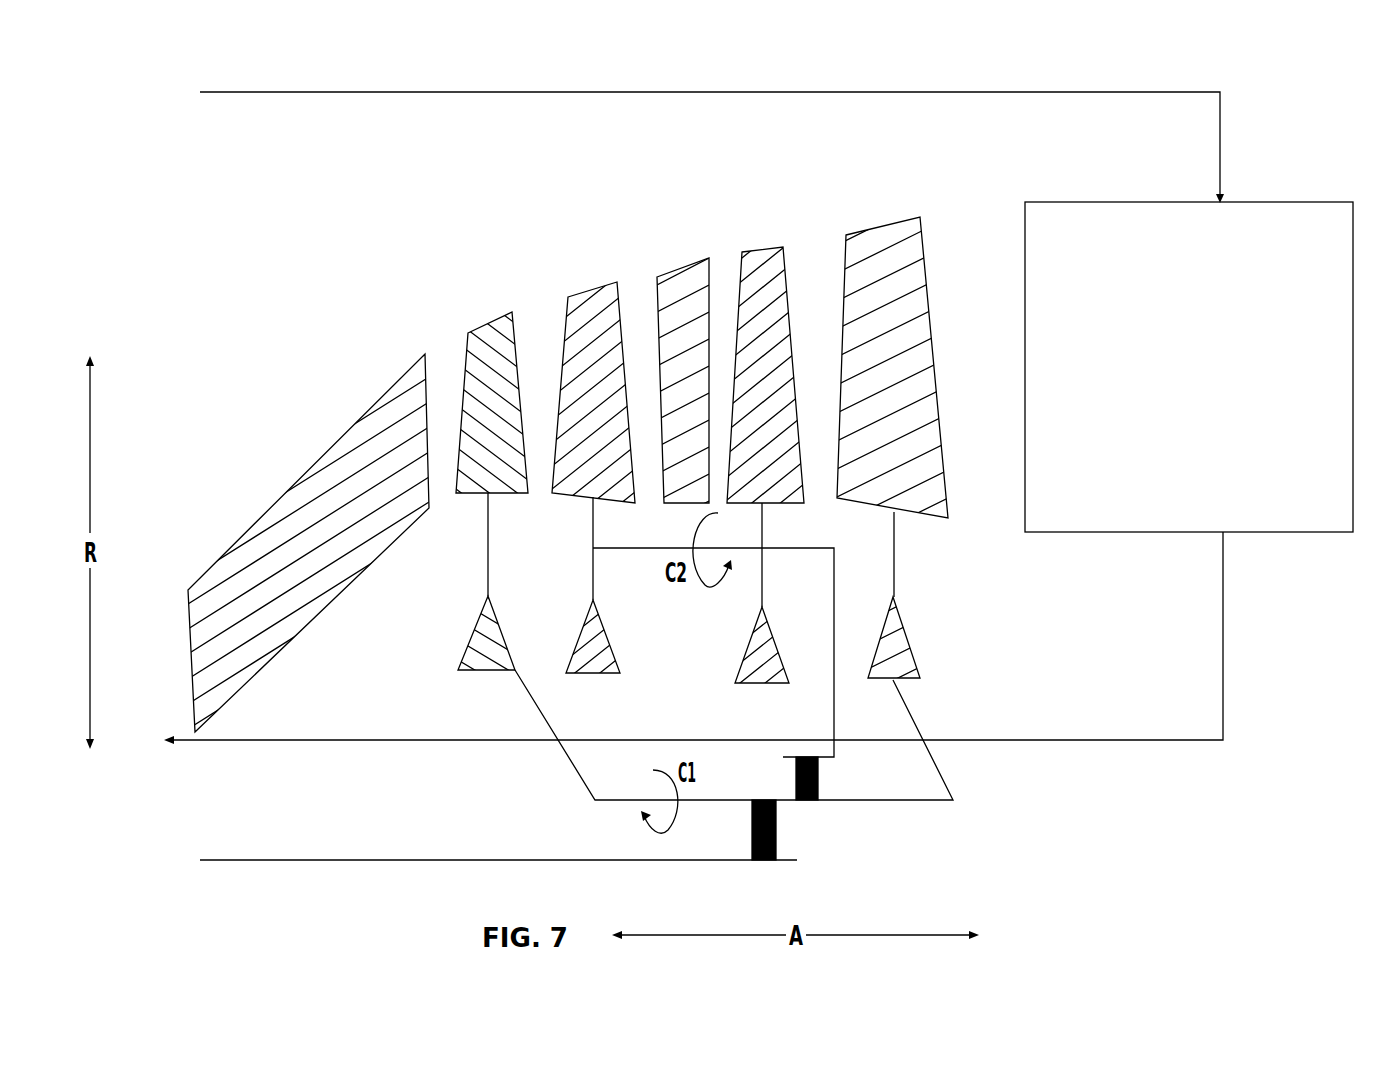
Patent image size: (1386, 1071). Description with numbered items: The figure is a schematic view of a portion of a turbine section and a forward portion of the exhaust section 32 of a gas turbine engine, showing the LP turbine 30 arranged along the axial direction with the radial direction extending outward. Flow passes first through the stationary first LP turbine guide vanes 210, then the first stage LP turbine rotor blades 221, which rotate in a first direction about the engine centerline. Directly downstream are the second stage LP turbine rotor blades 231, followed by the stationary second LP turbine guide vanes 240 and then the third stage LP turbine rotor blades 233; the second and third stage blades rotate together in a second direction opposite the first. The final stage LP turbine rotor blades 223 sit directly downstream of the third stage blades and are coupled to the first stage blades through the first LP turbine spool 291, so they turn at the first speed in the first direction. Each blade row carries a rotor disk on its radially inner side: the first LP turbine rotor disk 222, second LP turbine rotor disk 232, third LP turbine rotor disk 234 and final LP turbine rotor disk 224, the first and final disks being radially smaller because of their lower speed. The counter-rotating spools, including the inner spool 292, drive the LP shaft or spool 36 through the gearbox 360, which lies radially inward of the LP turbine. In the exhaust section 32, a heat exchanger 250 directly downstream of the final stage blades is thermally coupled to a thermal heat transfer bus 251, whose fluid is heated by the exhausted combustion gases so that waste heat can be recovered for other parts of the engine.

The LP turbine 30 is at (256, 334).
The exhaust section 32 is at (1302, 96).
The LP shaft or spool 36 is at (337, 860).
The first LP turbine guide vanes 210 is at (300, 500).
The first stage LP turbine rotor blades 221 is at (484, 338).
The first LP turbine rotor disk 222 is at (485, 632).
The final stage LP turbine rotor blades 223 is at (886, 240).
The final LP turbine rotor disk 224 is at (900, 652).
The second stage LP turbine rotor blades 231 is at (595, 298).
The second LP turbine rotor disk 232 is at (595, 648).
The third stage LP turbine rotor blades 233 is at (760, 258).
The third LP turbine rotor disk 234 is at (752, 653).
The second LP turbine guide vanes 240 is at (680, 285).
The heat exchanger 250 is at (1295, 202).
The thermal heat transfer bus 251 is at (397, 93).
The first LP turbine spool 291 is at (573, 770).
The second shaft 292 is at (830, 700).
The gearbox 360 is at (830, 852).